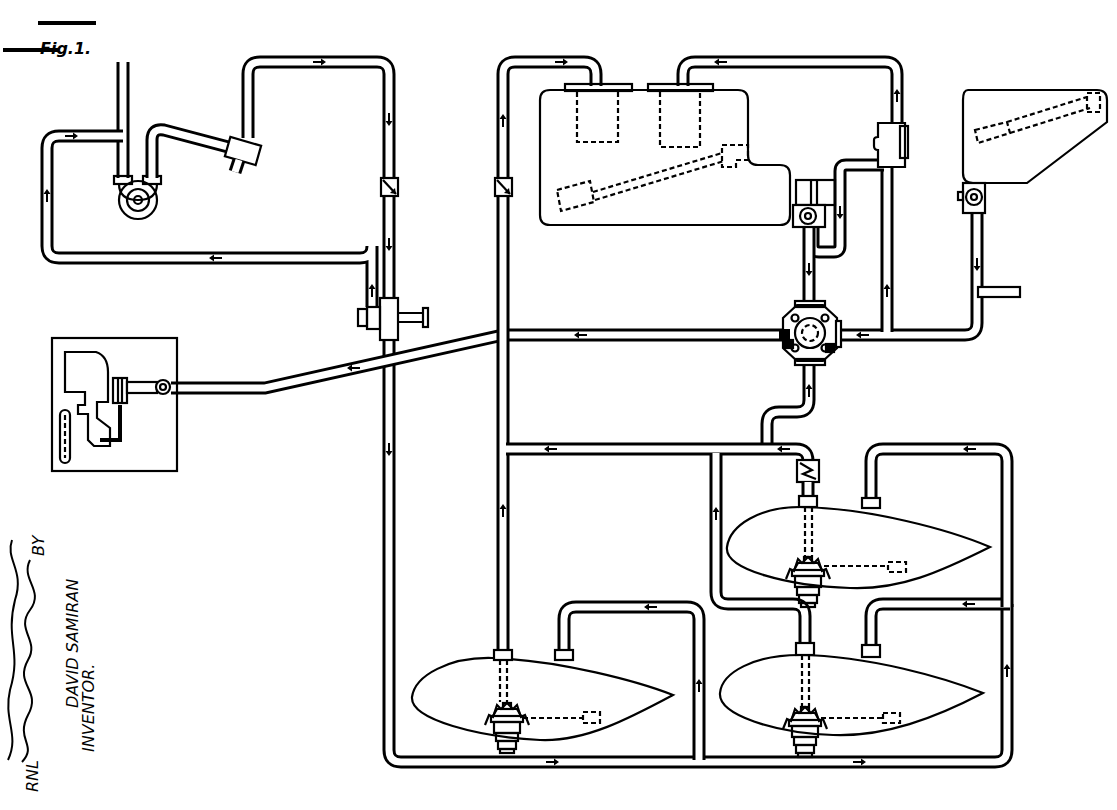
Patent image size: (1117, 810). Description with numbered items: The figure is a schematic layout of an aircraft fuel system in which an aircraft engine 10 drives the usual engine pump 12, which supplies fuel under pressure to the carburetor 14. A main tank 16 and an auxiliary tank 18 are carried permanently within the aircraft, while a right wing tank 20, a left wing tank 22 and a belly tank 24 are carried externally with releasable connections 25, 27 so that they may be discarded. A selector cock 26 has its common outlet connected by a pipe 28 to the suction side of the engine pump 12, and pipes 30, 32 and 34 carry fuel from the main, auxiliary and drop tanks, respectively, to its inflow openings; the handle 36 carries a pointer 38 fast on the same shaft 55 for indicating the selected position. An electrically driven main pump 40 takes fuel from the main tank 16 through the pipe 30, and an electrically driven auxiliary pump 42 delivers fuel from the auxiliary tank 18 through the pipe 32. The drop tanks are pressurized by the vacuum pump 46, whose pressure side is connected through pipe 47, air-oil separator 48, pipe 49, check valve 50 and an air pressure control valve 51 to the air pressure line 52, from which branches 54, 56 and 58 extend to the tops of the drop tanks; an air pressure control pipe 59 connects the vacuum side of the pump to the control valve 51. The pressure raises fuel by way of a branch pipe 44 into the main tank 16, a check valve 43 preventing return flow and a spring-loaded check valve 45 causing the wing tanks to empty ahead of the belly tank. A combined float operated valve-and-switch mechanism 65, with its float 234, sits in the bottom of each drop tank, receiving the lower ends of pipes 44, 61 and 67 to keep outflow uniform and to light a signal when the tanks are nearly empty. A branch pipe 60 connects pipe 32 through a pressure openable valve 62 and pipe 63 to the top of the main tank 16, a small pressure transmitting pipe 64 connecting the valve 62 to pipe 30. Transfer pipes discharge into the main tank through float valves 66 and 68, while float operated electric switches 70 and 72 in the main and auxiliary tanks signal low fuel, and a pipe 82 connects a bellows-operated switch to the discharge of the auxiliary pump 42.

The aircraft engine 10 is at (65, 472).
The engine pump 12 is at (160, 394).
The carburetor 14 is at (83, 444).
The main tank 16 is at (605, 226).
The auxiliary tank 18 is at (1056, 159).
The right wing tank 20 is at (936, 684).
The left wing tank 22 is at (618, 680).
The belly tank 24 is at (985, 538).
The releasable connection 25 is at (493, 652).
The selector cock 26 is at (838, 305).
The releasable connection 27 is at (574, 656).
The pipe 28 is at (781, 327).
The pipe 30 is at (803, 268).
The pipe 32 is at (945, 331).
The pipe 34 is at (821, 403).
The handle 36 is at (833, 352).
The pointer 38 is at (786, 344).
The main pump 40 is at (814, 215).
The auxiliary pump 42 is at (987, 204).
The check valve 43 is at (496, 189).
The branch pipe 44 is at (507, 238).
The check valve 45 is at (819, 462).
The vacuum pump 46 is at (156, 213).
The pipe 47 is at (205, 112).
The air-oil separator 48 is at (258, 159).
The pipe 49 is at (382, 150).
The check valve 50 is at (399, 188).
The air pressure control valve 51 is at (374, 330).
The air pressure line 52 is at (396, 634).
The branch 54 is at (940, 608).
The shaft 55 is at (843, 322).
The branch 56 is at (627, 609).
The branch 58 is at (947, 453).
The air pressure control pipe 59 is at (240, 260).
The branch pipe 60 is at (894, 260).
The fuel pipe 61 is at (772, 604).
The pressure openable valve 62 is at (909, 143).
The pipe 63 is at (797, 64).
The pressure transmitting pipe 64 is at (843, 250).
The float operated valve-and-switch mechanism 65 is at (488, 729).
The float valve 66 is at (603, 150).
The pipe 67 is at (815, 495).
The float valve 68 is at (681, 148).
The float operated electric switch 70 is at (655, 178).
The float operated electric switch 72 is at (1037, 118).
The pipe 82 is at (1000, 287).
The float 234 is at (590, 712).